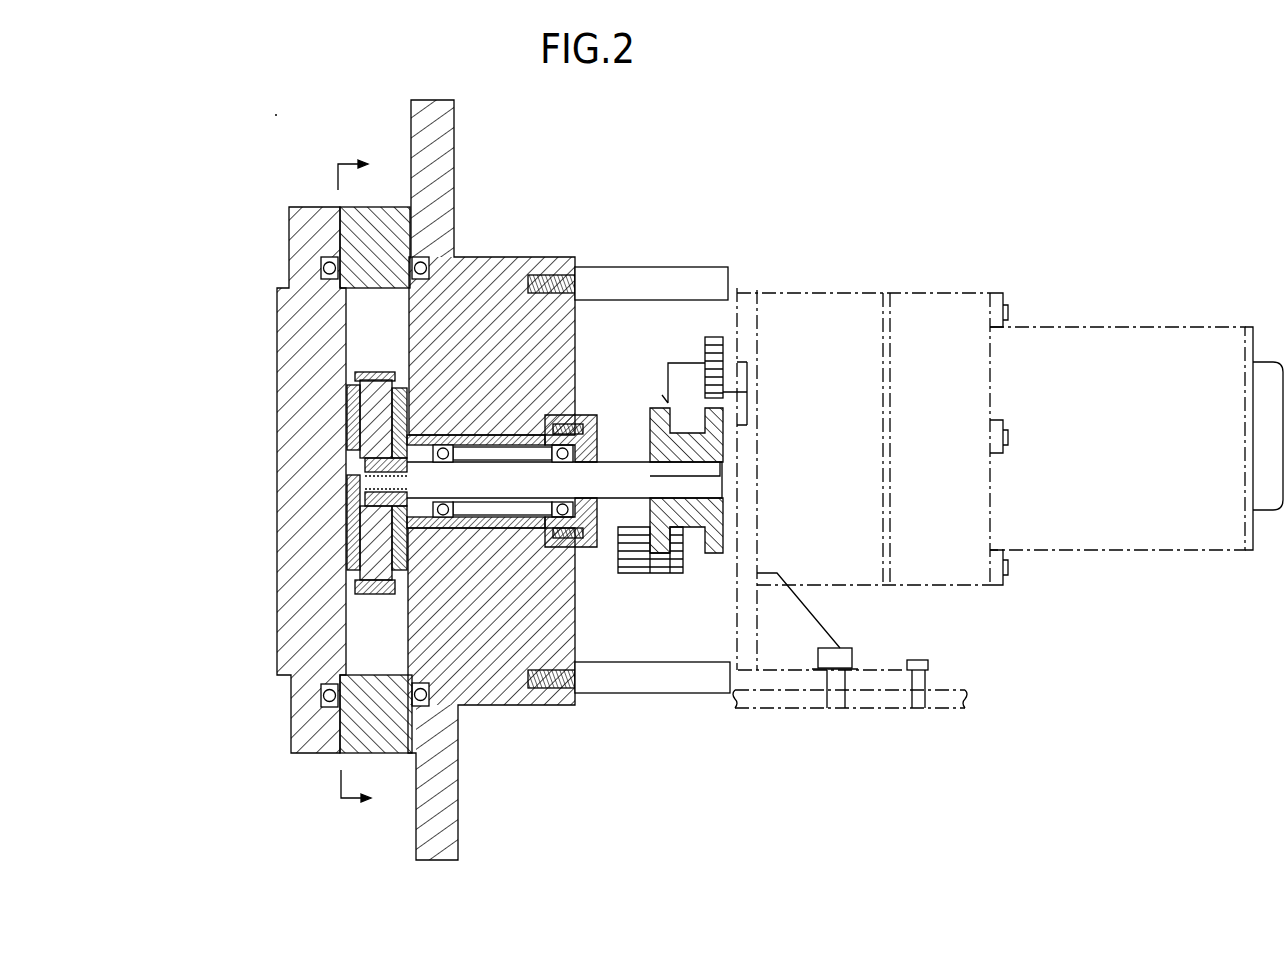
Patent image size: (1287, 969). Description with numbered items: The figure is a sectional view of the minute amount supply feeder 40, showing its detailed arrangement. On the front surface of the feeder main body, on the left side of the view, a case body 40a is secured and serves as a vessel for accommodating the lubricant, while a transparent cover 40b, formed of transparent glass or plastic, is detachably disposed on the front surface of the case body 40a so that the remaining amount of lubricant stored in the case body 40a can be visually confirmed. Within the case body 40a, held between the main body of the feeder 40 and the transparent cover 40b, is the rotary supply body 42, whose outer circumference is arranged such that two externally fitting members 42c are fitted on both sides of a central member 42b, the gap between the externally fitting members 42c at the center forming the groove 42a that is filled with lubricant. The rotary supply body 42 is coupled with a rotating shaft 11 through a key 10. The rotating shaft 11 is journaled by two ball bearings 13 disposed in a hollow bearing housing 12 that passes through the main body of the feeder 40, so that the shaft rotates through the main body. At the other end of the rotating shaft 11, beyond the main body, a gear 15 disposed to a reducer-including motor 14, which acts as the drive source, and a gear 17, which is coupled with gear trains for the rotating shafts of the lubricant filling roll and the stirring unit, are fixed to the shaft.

The minute amount supply feeder 40 is at (695, 130).
The case body 40a is at (345, 226).
The transparent cover 40b is at (293, 611).
The rotary supply body 42 is at (358, 416).
The groove to be filled with lubricant 42a is at (370, 372).
The central member 42b is at (352, 453).
The externally fitting members 42c is at (350, 413).
The key 10 is at (347, 460).
The rotating shaft 11 is at (397, 502).
The bearing housing 12 is at (512, 419).
The ball bearings 13 is at (578, 454).
The reducer-including motor 14 is at (867, 292).
The gear 15 is at (713, 340).
The gear 17 is at (723, 410).